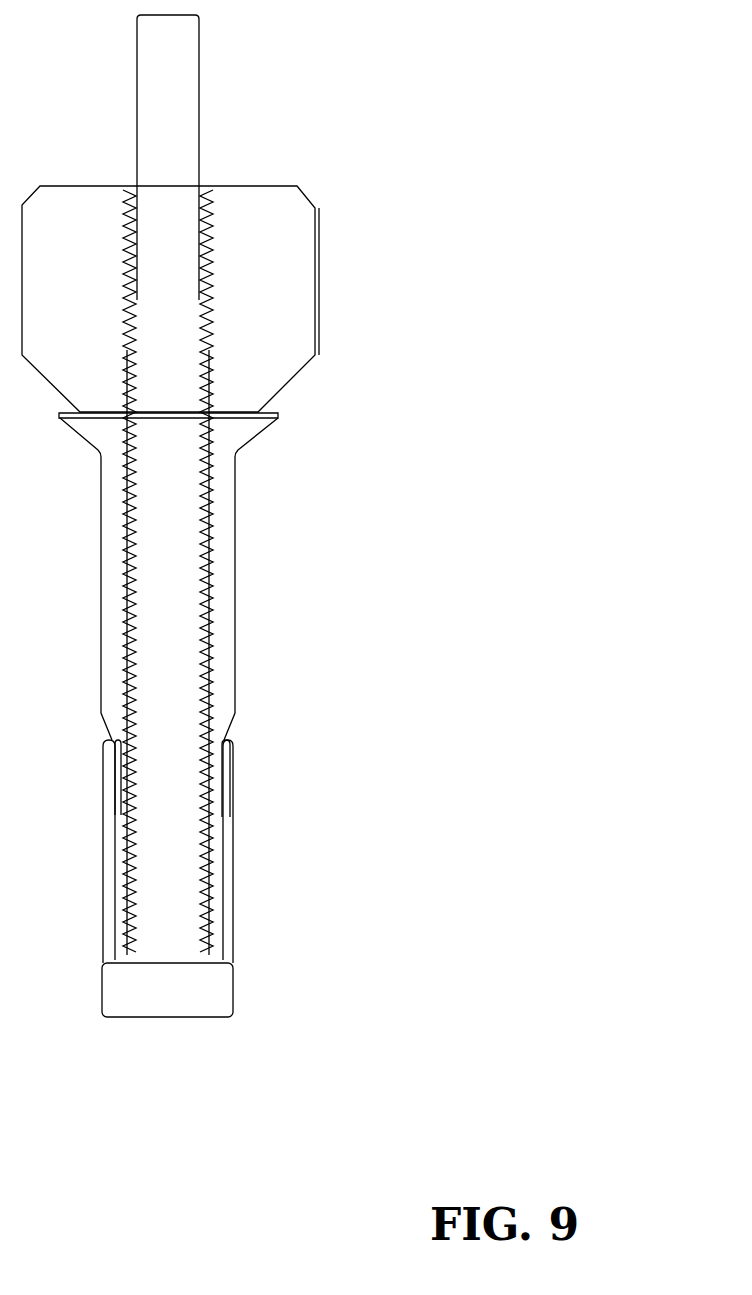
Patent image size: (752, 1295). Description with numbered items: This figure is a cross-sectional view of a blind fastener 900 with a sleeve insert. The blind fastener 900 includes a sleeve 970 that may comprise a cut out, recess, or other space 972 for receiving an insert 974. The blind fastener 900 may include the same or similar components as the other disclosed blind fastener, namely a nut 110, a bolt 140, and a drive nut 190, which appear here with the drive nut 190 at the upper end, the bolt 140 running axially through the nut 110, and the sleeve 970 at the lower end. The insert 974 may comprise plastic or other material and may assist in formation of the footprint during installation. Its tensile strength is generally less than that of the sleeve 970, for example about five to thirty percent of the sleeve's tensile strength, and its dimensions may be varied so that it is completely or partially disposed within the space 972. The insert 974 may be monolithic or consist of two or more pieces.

The blind fastener 900 is at (333, 75).
The bolt 140 is at (193, 548).
The drive nut 190 is at (290, 305).
The nut 110 is at (226, 632).
The sleeve 970 is at (225, 893).
The cut out, recess, or other space 972 is at (114, 790).
The insert 974 is at (217, 788).